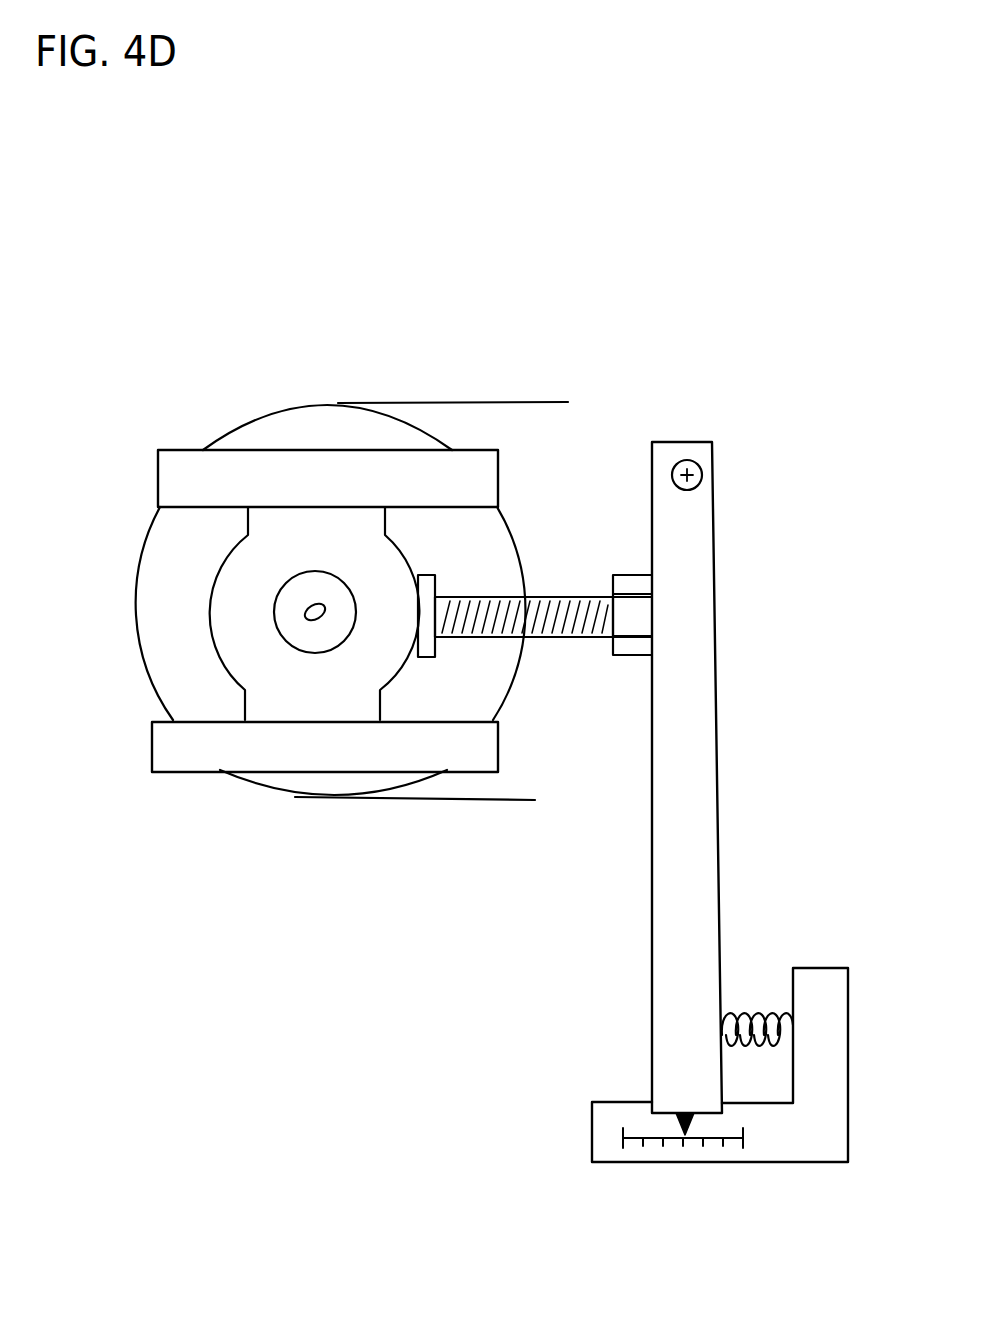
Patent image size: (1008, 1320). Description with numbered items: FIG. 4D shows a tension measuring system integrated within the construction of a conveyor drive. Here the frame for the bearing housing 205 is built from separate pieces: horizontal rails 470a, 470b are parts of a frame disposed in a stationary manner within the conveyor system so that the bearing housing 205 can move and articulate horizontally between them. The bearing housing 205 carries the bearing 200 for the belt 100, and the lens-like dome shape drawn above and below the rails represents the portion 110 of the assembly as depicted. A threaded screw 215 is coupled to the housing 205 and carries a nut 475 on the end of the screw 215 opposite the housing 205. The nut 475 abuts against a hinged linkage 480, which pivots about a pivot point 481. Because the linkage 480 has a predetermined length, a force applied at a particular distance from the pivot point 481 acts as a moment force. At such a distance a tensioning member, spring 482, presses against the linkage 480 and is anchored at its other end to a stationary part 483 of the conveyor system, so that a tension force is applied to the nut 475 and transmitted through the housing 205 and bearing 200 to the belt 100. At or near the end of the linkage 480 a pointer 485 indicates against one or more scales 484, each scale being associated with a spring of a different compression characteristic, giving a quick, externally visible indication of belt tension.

The belt 100 is at (433, 395).
The lens 110 is at (280, 437).
The bearing 200 is at (290, 612).
The bearing housing 205 is at (252, 562).
The threaded screw 215 is at (563, 598).
The horizontal rail 470a is at (506, 462).
The horizontal rail 470b is at (505, 756).
The nut 475 is at (606, 648).
The hinged linkage 480 is at (738, 795).
The pivot point 481 is at (687, 460).
The spring 482 is at (748, 1000).
The stationary part 483 is at (855, 1078).
The scale 484 is at (750, 1140).
The pointer 485 is at (687, 1110).